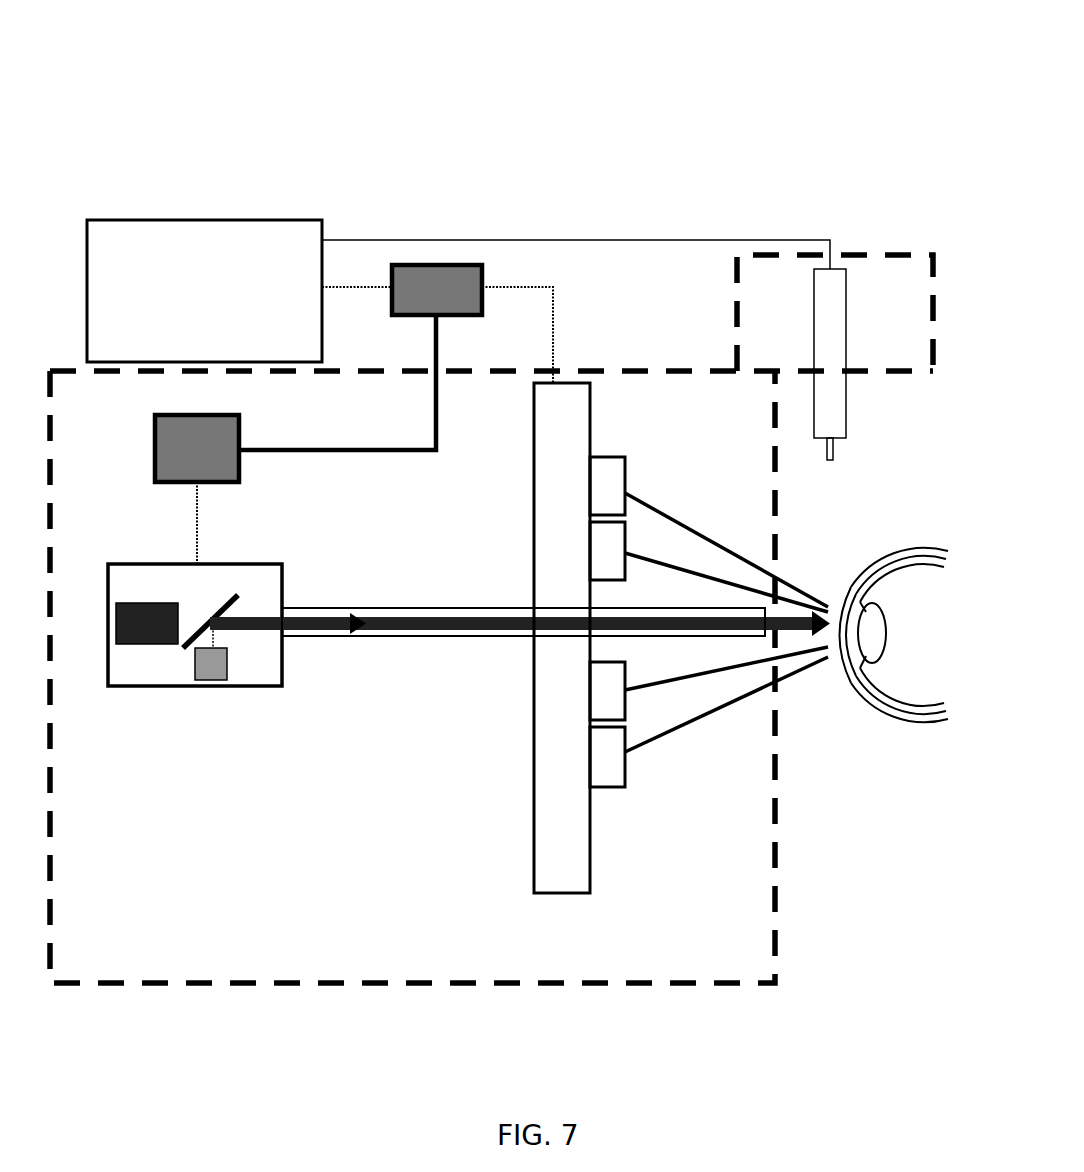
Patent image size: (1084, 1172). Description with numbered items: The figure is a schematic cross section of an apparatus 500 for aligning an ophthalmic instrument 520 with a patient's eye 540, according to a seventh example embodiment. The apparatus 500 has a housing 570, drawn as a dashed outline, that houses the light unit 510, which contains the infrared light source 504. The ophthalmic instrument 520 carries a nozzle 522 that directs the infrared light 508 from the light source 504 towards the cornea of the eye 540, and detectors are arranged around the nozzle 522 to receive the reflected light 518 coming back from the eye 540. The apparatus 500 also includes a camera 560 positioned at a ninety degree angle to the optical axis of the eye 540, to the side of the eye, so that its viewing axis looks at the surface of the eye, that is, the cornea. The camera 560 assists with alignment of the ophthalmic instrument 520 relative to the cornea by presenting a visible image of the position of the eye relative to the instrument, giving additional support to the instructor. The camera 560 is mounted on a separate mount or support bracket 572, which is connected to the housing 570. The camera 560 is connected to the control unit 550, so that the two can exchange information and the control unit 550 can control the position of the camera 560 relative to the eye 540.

The apparatus 500 is at (592, 178).
The infrared light source 504 is at (138, 646).
The infrared light 508 is at (500, 612).
The light unit 510 is at (260, 705).
The reflected light 518 is at (657, 505).
The ophthalmic instrument 520 is at (440, 664).
The nozzle 522 is at (483, 640).
The eye 540 is at (930, 620).
The control unit 550 is at (255, 240).
The camera 560 is at (832, 330).
The housing 570 is at (785, 869).
The support bracket 572 is at (771, 248).